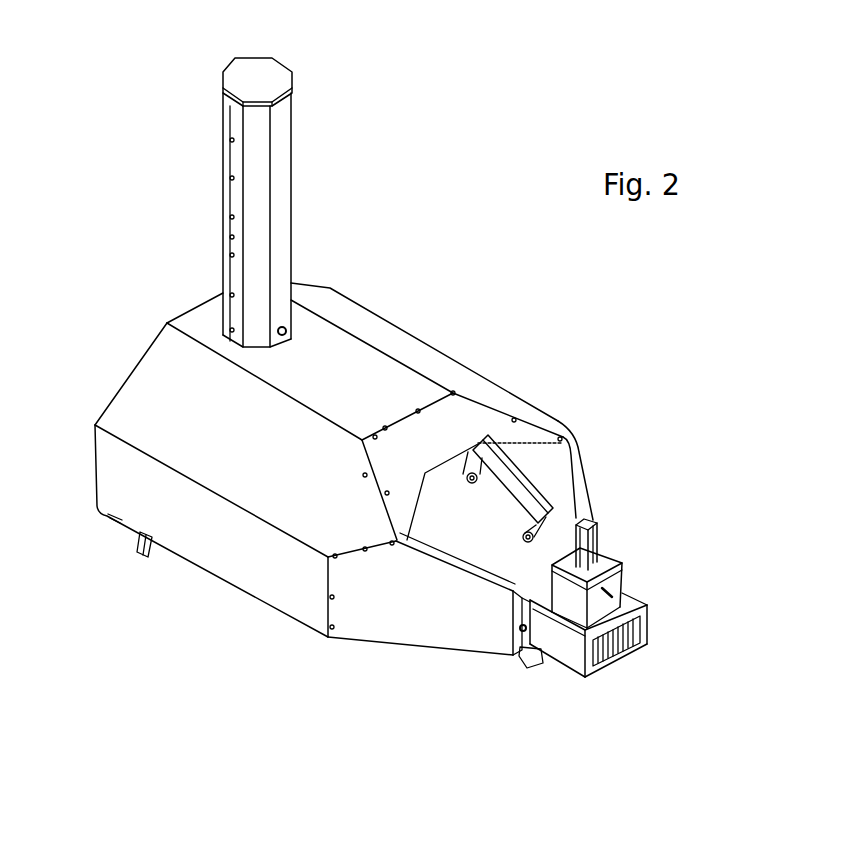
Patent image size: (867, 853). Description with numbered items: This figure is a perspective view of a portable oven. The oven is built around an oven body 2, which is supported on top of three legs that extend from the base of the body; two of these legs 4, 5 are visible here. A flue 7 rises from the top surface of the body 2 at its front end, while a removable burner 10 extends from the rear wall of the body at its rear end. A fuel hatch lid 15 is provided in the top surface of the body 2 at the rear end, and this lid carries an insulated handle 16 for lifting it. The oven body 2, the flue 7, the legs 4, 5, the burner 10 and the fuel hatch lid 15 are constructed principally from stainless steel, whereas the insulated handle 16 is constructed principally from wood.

The oven body 2 is at (488, 380).
The leg 4 is at (150, 546).
The leg 5 is at (527, 668).
The flue 7 is at (223, 187).
The removable burner 10 is at (645, 607).
The fuel hatch lid 15 is at (552, 472).
The insulated handle 16 is at (553, 498).